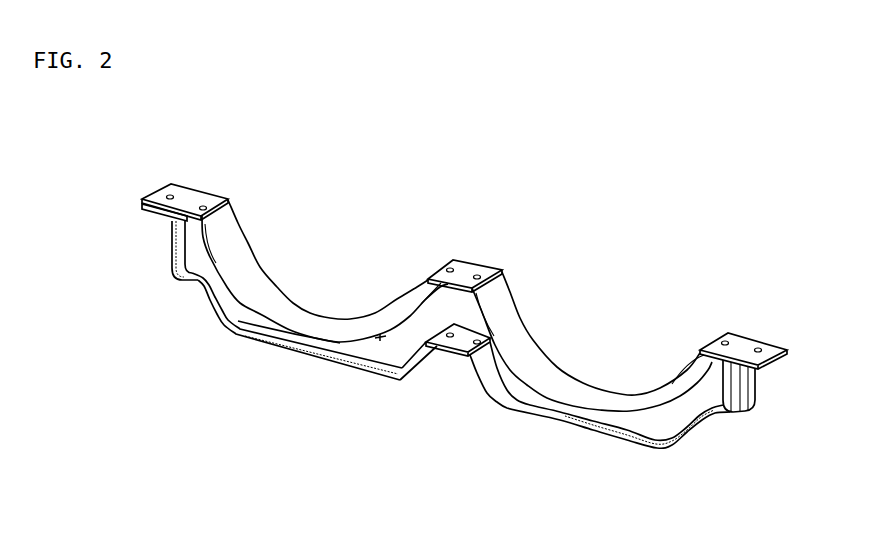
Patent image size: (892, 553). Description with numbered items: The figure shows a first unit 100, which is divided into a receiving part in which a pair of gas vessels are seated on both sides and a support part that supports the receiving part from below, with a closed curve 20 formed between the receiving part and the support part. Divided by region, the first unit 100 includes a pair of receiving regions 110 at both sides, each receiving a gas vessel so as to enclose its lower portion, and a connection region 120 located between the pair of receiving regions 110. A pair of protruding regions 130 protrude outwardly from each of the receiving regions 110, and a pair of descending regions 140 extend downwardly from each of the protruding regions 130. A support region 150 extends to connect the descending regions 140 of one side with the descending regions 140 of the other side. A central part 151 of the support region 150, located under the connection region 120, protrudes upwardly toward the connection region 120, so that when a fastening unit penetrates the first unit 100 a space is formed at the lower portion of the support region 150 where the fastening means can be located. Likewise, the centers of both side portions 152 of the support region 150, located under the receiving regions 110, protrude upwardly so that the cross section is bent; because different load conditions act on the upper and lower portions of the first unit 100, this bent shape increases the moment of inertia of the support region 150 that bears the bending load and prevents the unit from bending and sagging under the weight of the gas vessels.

The first unit 100 is at (424, 88).
The receiving regions 110 is at (307, 317).
The connection region 120 is at (466, 268).
The protruding regions 130 is at (193, 198).
The descending regions 140 is at (169, 245).
The support region 150 is at (495, 394).
The central part of the support region 151 is at (457, 355).
The side portions of the support region 152 is at (293, 353).
The closed curve 20 is at (380, 338).